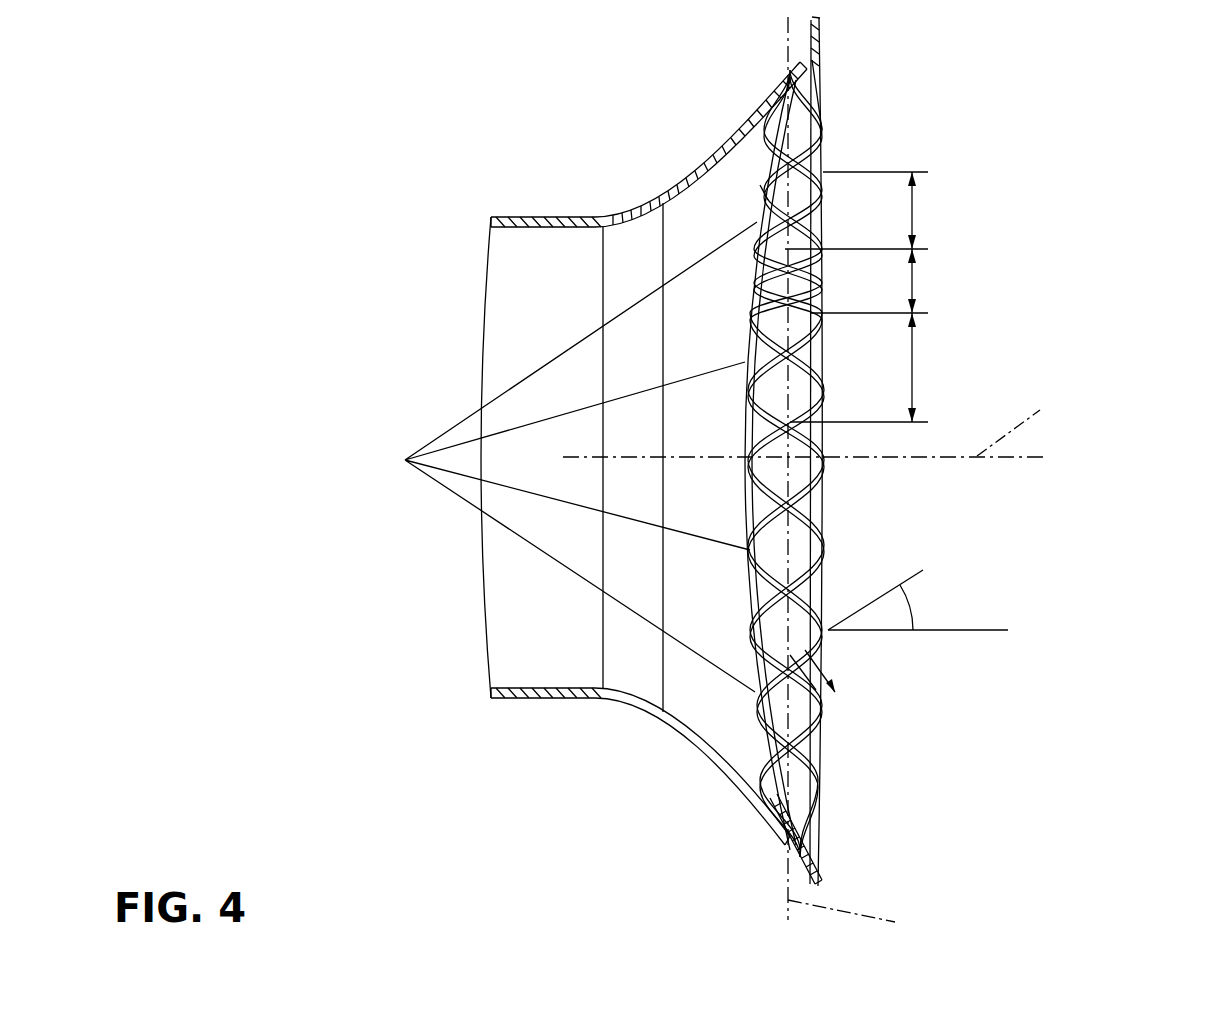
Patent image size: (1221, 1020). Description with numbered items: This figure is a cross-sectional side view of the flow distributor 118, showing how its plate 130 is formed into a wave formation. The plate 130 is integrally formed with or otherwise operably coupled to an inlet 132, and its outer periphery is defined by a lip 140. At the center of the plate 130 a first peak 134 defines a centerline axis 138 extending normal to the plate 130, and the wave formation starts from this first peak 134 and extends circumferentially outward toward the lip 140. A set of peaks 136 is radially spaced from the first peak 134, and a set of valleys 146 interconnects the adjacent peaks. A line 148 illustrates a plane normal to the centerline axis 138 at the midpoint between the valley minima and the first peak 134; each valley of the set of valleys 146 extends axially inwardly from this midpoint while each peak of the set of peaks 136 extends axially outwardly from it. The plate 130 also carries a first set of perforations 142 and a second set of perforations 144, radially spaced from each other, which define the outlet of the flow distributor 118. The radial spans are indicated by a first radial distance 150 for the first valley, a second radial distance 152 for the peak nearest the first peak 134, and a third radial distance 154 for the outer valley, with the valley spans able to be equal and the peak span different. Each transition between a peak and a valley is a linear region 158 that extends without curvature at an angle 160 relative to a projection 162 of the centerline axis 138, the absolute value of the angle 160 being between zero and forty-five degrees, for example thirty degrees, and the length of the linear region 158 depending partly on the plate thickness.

The flow distributor 118 is at (1183, 125).
The plate 130 is at (842, 55).
The inlet 132 is at (524, 208).
The first peak 134 is at (828, 458).
The set of peaks 136 is at (830, 632).
The centerline axis 138 is at (822, 423).
The lip 140 is at (820, 863).
The first set of perforations 142 is at (827, 130).
The second set of perforations 144 is at (758, 197).
The set of valleys 146 is at (561, 457).
The line 148 is at (863, 916).
The first radial distance 150 is at (913, 365).
The second radial distance 152 is at (913, 280).
The third radial distance 154 is at (913, 212).
The linear region 158 is at (797, 685).
The angle 160 is at (912, 604).
The projection of the centerline axis 162 is at (978, 630).